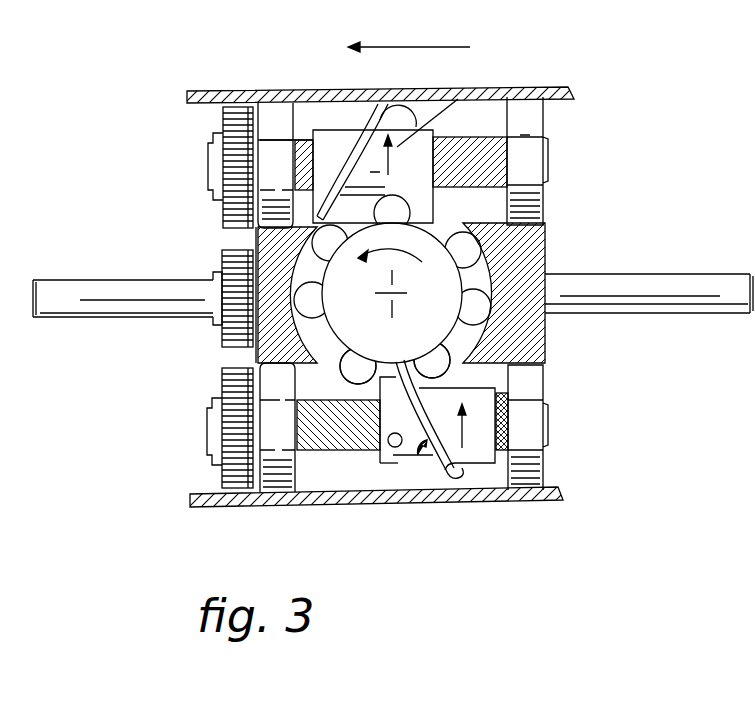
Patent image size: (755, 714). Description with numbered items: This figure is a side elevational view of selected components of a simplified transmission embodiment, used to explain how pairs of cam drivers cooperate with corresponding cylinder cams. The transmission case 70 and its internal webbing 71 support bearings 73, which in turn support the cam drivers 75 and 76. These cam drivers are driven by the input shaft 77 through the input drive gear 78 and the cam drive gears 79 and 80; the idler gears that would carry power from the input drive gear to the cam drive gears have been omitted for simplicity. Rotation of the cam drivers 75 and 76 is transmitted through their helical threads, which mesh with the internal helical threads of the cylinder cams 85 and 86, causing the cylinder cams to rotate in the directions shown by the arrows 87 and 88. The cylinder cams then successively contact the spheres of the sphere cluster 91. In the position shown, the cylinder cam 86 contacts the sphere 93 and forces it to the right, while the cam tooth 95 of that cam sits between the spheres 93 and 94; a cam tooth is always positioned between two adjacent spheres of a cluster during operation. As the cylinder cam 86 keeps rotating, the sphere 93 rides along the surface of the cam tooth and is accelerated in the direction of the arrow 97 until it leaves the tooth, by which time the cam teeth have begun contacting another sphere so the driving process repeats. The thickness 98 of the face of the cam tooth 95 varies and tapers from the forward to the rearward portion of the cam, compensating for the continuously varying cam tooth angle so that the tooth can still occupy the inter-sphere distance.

The transmission case 70 is at (507, 87).
The internal webbing 71 is at (530, 258).
The bearings 73 is at (275, 112).
The cam driver 75 is at (457, 137).
The cam driver 76 is at (337, 450).
The input shaft 77 is at (123, 290).
The input drive gear 78 is at (233, 322).
The cam drive gear 79 is at (223, 118).
The cam drive gear 80 is at (222, 382).
The cylinder cam 85 is at (335, 140).
The cylinder cam 86 is at (485, 398).
The arrow 87 is at (462, 88).
The arrow 88 is at (473, 430).
The sphere cluster 91 is at (420, 237).
The sphere 93 is at (443, 363).
The sphere 94 is at (353, 373).
The cam tooth 95 is at (425, 477).
The arrow 97 is at (377, 270).
The thickness 98 is at (457, 480).